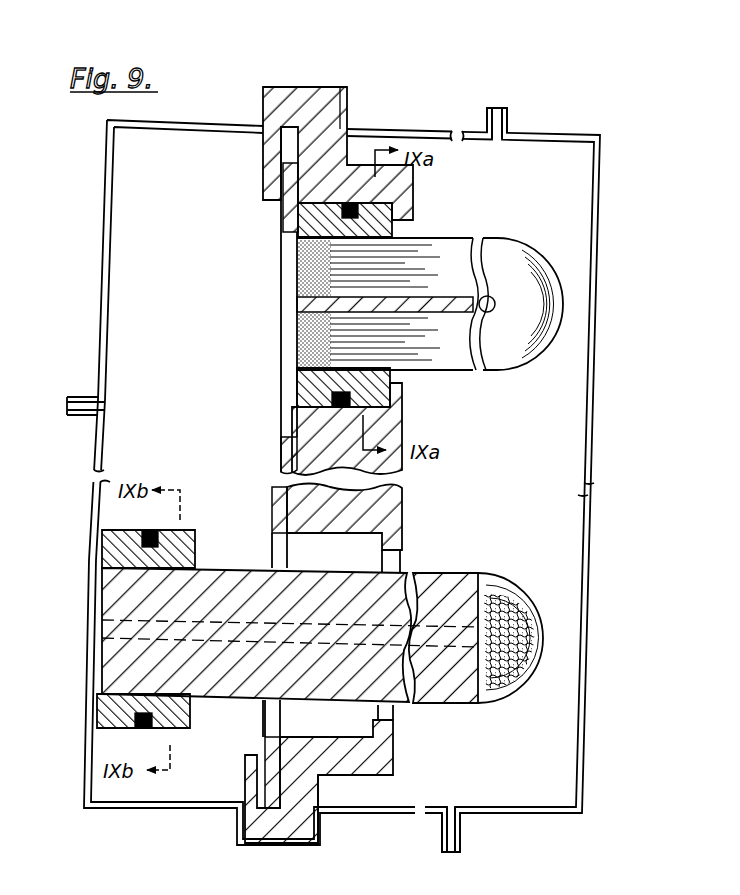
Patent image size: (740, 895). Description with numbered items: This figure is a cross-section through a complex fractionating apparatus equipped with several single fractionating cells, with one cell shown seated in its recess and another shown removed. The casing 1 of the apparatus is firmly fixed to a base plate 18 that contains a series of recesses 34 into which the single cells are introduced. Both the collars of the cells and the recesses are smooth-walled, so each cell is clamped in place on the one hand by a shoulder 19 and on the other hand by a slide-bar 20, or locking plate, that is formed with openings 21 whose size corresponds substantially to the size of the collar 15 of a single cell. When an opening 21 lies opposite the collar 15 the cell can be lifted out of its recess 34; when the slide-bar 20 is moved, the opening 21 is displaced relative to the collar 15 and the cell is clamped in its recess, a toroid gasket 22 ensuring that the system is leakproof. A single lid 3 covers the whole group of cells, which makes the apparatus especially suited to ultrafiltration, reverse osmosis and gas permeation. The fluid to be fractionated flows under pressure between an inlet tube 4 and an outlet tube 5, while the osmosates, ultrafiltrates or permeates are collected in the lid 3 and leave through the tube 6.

The casing 1 is at (547, 820).
The lid 3 is at (130, 810).
The inlet tube 4 is at (452, 852).
The outlet tube 5 is at (503, 110).
The tube 6 is at (76, 418).
The collar 15 is at (190, 714).
The base plate 18 is at (297, 838).
The shoulder 19 is at (388, 732).
The slide-bar 20 is at (270, 748).
The opening 21 is at (281, 392).
The toroid gasket 22 is at (150, 530).
The recess 34 is at (346, 735).